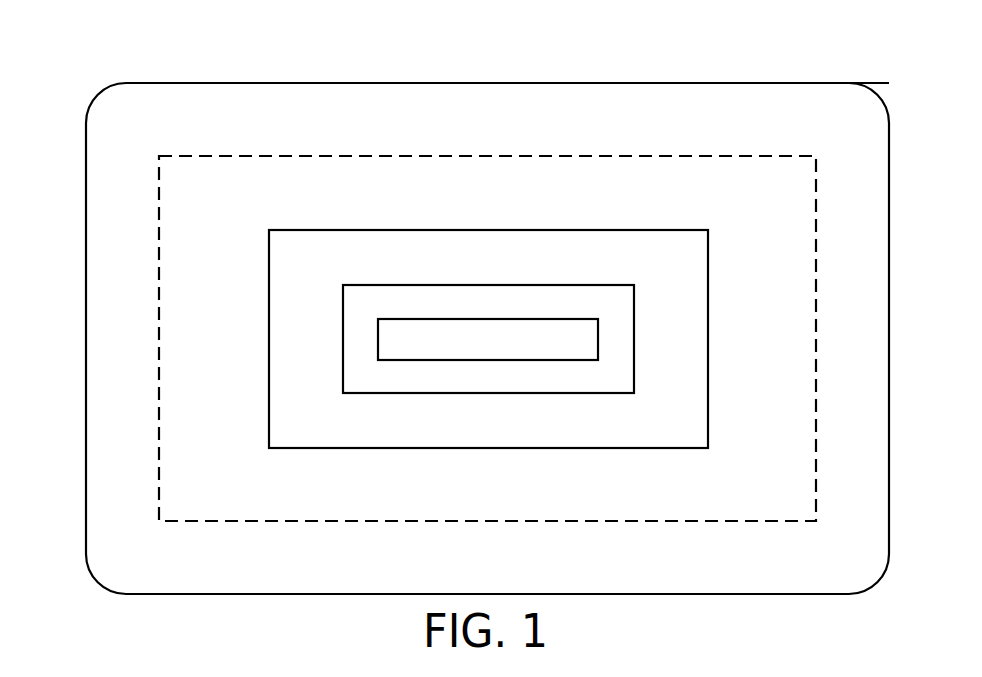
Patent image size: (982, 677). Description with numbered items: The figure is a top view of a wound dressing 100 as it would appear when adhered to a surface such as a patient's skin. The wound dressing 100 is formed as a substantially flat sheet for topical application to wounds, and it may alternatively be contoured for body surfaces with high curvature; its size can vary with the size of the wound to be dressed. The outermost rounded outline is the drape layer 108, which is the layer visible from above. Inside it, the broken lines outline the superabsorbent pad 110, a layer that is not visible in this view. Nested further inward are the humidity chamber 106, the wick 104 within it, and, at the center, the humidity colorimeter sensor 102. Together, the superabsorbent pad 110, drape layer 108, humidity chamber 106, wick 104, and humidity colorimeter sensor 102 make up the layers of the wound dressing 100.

The wound dressing 100 is at (123, 61).
The humidity colorimeter sensor 102 is at (420, 339).
The wick 104 is at (604, 303).
The humidity chamber 106 is at (317, 242).
The drape layer 108 is at (779, 97).
The superabsorbent pad 110 is at (767, 177).